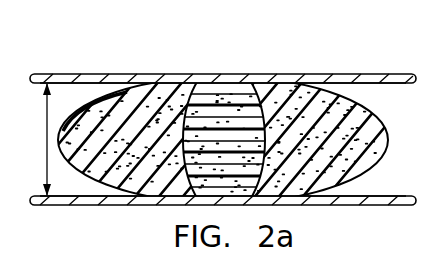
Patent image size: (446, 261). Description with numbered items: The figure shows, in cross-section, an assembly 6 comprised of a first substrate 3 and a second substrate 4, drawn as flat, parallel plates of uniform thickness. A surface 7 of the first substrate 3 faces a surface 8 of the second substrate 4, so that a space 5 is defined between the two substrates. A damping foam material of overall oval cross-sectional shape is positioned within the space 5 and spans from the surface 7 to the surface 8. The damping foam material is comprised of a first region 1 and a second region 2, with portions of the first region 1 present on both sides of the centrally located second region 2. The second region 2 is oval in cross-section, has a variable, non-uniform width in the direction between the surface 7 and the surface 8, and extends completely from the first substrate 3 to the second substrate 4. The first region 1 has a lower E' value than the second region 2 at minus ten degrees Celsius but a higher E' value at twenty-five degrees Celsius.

The first region 1 is at (147, 97).
The second region 2 is at (226, 92).
The first substrate 3 is at (360, 74).
The second substrate 4 is at (375, 206).
The space 5 is at (47, 130).
The assembly 6 is at (223, 118).
The surface of the first substrate 7 is at (386, 84).
The surface of the second substrate 8 is at (378, 196).